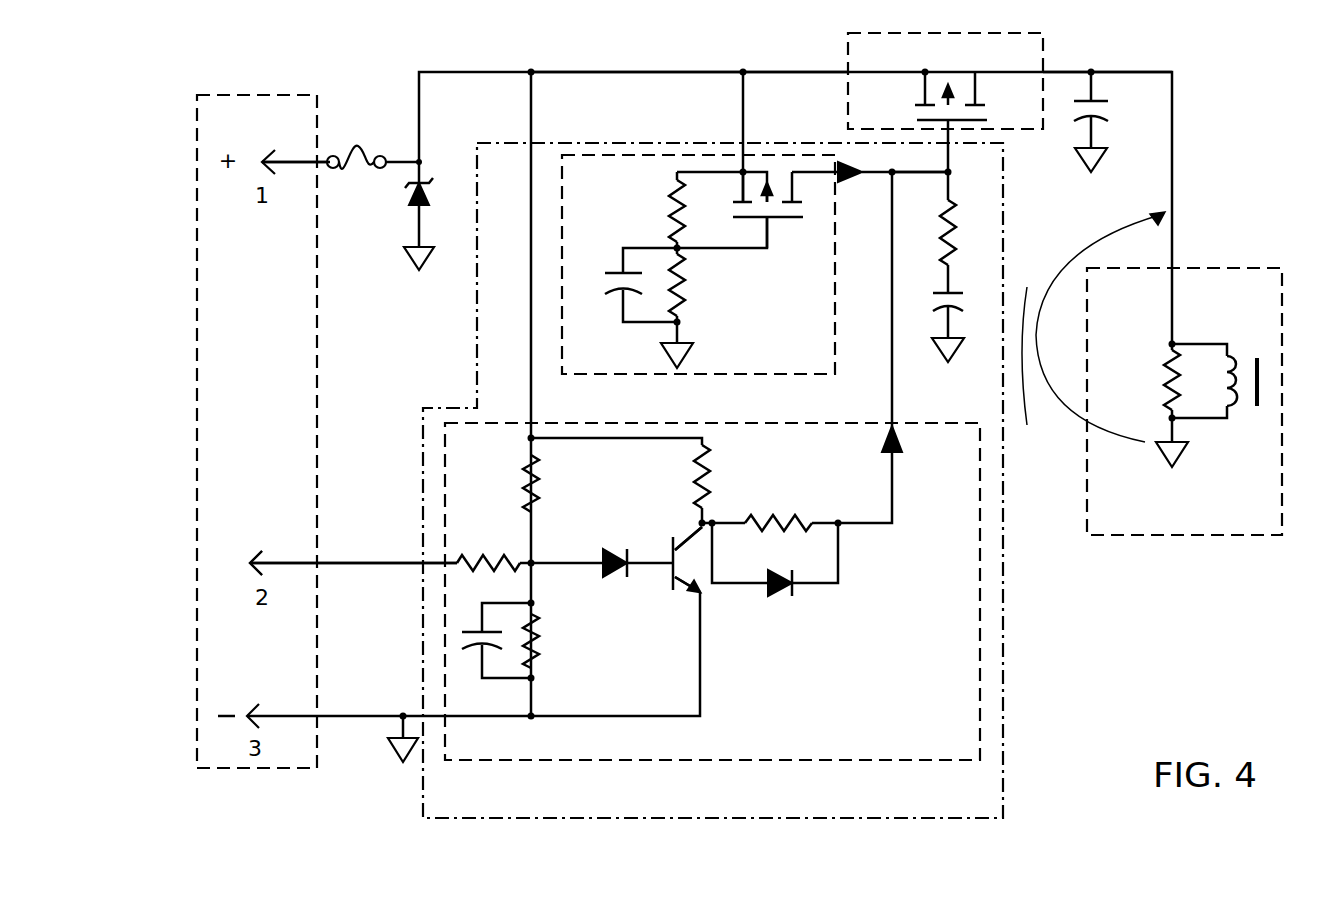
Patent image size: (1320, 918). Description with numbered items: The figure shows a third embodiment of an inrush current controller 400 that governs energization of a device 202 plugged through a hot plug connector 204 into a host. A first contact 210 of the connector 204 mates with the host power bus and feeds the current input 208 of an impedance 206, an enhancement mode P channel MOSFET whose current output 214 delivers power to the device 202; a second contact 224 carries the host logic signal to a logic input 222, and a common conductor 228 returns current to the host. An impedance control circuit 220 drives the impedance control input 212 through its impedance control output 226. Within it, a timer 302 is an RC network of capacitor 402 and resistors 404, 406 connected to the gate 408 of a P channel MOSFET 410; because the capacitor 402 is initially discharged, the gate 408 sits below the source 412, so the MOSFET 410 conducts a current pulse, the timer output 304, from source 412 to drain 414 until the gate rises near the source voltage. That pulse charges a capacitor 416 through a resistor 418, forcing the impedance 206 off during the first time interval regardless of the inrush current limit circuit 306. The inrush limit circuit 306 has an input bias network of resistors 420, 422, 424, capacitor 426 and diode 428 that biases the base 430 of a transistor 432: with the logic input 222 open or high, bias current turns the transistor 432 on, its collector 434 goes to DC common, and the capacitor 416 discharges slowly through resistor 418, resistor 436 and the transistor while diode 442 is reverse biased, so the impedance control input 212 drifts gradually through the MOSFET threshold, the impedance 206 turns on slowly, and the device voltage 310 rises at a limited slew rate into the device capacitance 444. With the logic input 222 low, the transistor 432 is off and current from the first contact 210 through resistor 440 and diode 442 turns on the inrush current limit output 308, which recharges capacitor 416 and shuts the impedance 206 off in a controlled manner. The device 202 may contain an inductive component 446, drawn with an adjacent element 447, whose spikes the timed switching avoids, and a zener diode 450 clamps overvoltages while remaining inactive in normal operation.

The device 202 is at (1192, 268).
The connector 204 is at (317, 333).
The impedance 206 is at (848, 33).
The current input 208 is at (848, 72).
The first contact 210 is at (258, 170).
The impedance control input 212 is at (955, 125).
The current output 214 is at (1043, 73).
The impedance control circuit 220 is at (1005, 560).
The logic input 222 is at (423, 555).
The second contact 224 is at (253, 563).
The impedance control output 226 is at (952, 172).
The common conductor 228 is at (400, 763).
The timer 302 is at (700, 155).
The timer output 304 is at (845, 178).
The inrush current limit circuit 306 is at (983, 632).
The inrush current limit output 308 is at (886, 447).
The device voltage 310 is at (1093, 333).
The inrush current controller 400 is at (1113, 635).
The capacitor 402 is at (615, 290).
The resistor 404 is at (690, 280).
The resistor 406 is at (675, 212).
The gate 408 is at (790, 220).
The P channel MOSFET 410 is at (776, 140).
The source 412 is at (740, 198).
The drain 414 is at (787, 195).
The capacitor 416 is at (935, 315).
The resistor 418 is at (957, 227).
The resistor 420 is at (540, 468).
The resistor 422 is at (543, 660).
The resistor 424 is at (463, 560).
The capacitor 426 is at (470, 645).
The diode 428 is at (615, 580).
The base 430 is at (673, 557).
The transistor 432 is at (668, 578).
The collector 434 is at (700, 521).
The resistor 436 is at (790, 515).
The resistor 440 is at (712, 470).
The diode 442 is at (778, 597).
The device capacitance 444 is at (1105, 101).
The inductive component 446 is at (1240, 362).
The inductor 447 is at (1178, 368).
The zener diode 450 is at (405, 200).